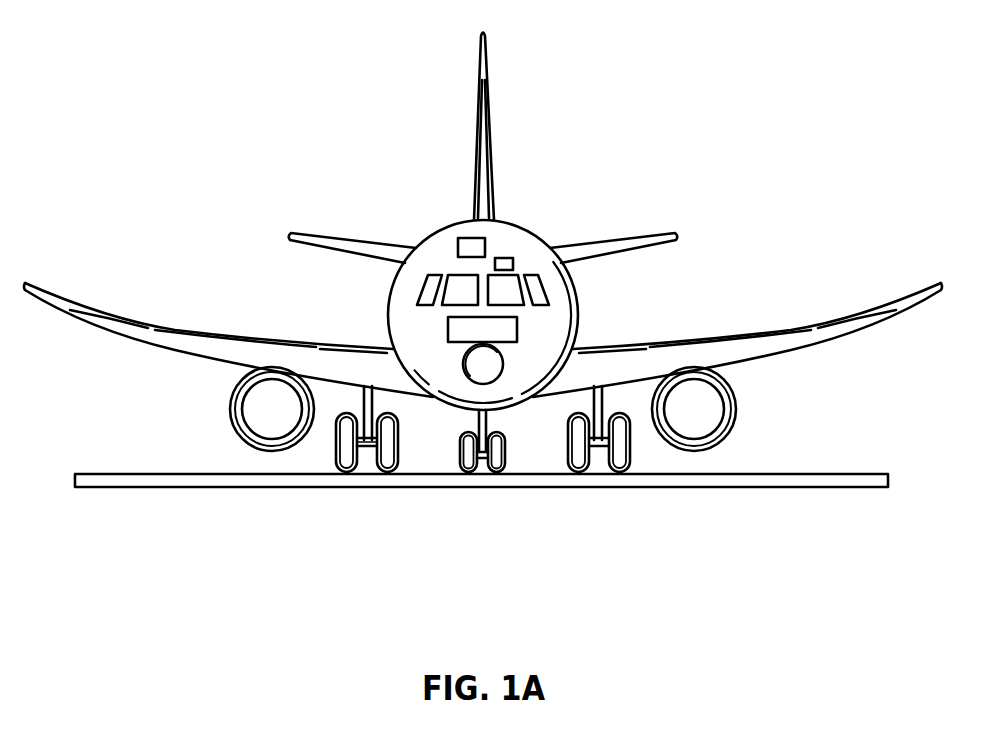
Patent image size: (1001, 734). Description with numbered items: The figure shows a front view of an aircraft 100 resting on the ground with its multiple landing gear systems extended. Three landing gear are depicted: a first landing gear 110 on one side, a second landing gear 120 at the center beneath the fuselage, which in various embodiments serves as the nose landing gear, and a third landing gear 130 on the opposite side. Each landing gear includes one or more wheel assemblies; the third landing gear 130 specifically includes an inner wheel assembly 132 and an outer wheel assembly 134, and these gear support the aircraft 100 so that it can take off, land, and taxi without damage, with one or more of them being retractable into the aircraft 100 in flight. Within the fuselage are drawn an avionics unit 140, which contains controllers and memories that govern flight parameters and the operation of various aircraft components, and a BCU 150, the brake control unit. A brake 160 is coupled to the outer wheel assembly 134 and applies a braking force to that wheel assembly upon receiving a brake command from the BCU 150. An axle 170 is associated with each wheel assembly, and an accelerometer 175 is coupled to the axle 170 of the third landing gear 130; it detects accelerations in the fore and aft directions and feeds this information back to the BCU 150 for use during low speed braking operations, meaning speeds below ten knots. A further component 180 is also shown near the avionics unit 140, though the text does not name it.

The aircraft 100 is at (330, 86).
The first landing gear 110 is at (630, 455).
The second landing gear 120 is at (505, 458).
The third landing gear 130 is at (320, 450).
The inner wheel assembly 132 is at (370, 467).
The outer wheel assembly 134 is at (347, 467).
The avionics unit 140 is at (487, 246).
The BCU 150 is at (517, 332).
The brake 160 is at (348, 467).
The axle 170 is at (363, 470).
The accelerometer 175 is at (355, 470).
The communication unit 180 is at (513, 263).